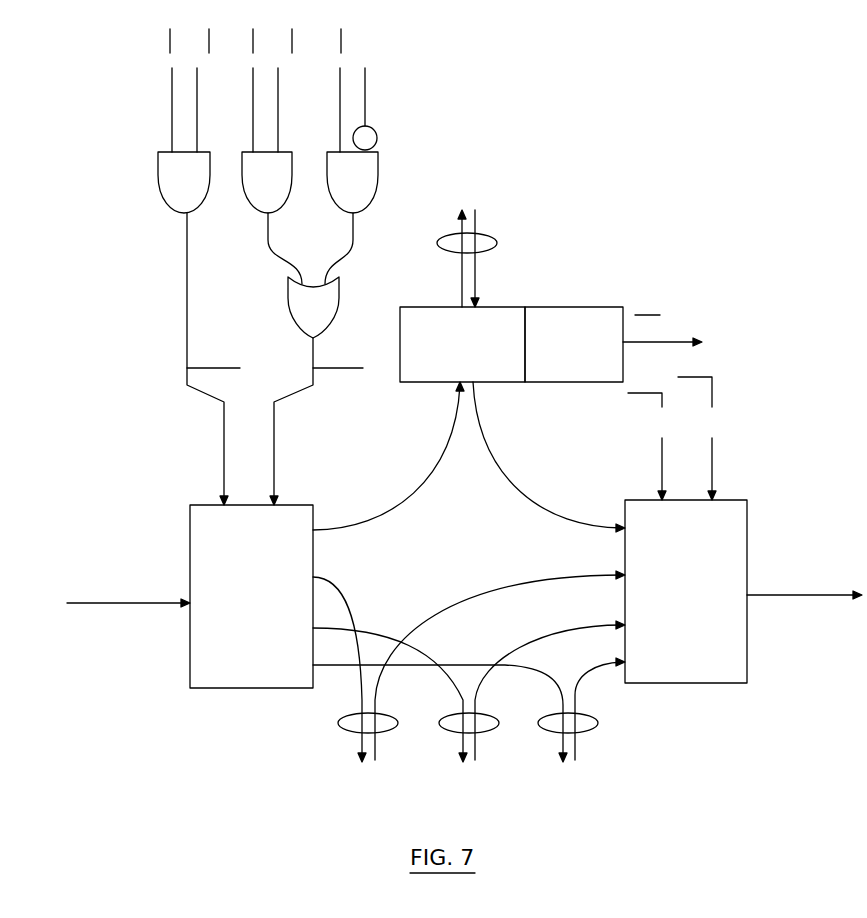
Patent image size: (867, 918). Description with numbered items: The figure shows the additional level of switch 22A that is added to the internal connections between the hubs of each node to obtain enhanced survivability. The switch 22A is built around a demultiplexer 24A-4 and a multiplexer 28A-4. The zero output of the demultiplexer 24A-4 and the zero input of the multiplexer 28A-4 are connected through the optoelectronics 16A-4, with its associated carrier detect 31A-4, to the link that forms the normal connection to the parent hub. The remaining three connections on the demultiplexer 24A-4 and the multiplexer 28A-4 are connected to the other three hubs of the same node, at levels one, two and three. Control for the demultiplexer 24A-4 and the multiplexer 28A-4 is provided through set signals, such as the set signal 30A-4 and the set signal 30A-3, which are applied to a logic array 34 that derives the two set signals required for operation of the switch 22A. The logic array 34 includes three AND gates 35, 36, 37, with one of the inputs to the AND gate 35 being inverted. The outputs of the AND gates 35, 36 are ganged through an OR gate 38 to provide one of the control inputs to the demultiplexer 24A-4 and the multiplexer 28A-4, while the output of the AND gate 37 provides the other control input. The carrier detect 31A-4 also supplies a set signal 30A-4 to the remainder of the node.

The switch 22A is at (112, 441).
The logic array 34 is at (152, 212).
The AND gate 35 is at (378, 192).
The AND gate 36 is at (292, 192).
The AND gate 37 is at (207, 192).
The OR gate 38 is at (300, 304).
The set signal 30A-4 is at (172, 68).
The set signal 30A-3 is at (197, 68).
The optoelectronics 16A-4 is at (430, 375).
The carrier detect 31A-4 is at (567, 375).
The demultiplexer 24A-4 is at (215, 675).
The multiplexer 28A-4 is at (735, 650).